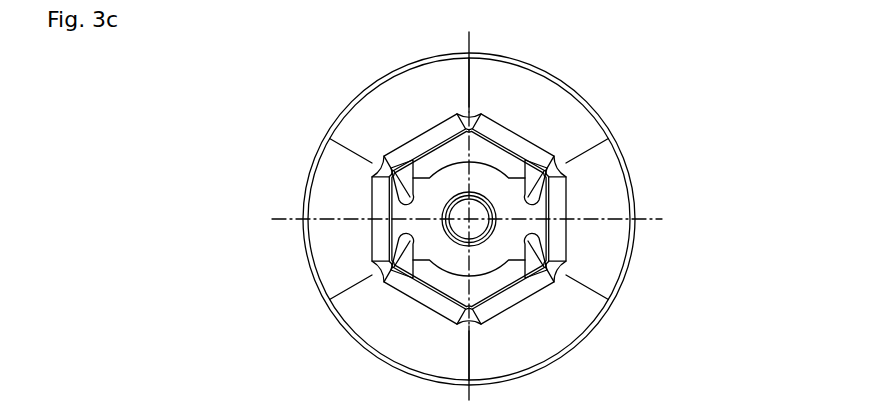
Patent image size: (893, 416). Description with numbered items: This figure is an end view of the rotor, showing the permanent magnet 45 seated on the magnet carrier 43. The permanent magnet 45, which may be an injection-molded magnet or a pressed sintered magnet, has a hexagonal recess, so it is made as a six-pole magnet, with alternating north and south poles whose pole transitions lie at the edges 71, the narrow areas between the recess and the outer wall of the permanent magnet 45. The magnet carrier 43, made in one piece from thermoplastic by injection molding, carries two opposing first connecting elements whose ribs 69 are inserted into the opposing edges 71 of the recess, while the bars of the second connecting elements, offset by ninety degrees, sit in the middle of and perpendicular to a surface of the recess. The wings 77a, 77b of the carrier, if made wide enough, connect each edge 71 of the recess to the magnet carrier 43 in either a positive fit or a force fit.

The permanent magnet 45 is at (643, 188).
The ribs 69 is at (546, 165).
The edges 71 is at (547, 172).
The wing 77a is at (389, 185).
The wing 77b is at (391, 255).
The magnet carrier 43 is at (439, 261).